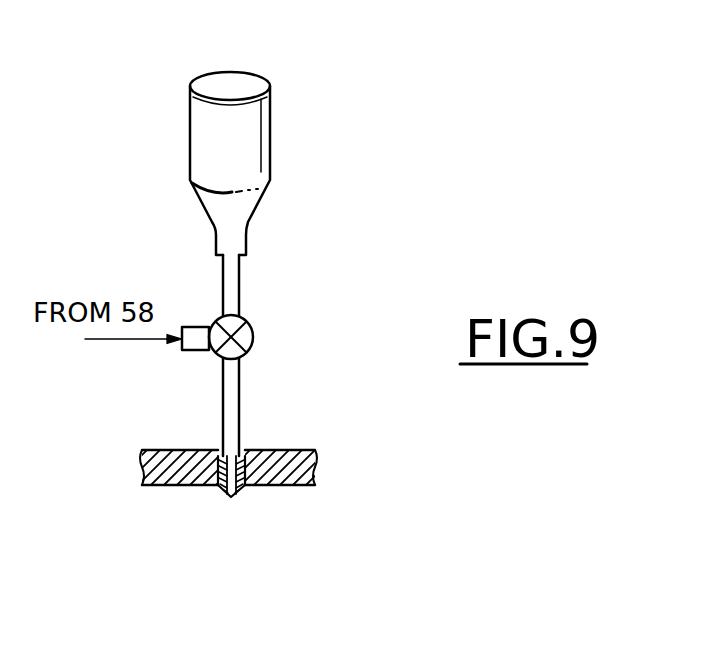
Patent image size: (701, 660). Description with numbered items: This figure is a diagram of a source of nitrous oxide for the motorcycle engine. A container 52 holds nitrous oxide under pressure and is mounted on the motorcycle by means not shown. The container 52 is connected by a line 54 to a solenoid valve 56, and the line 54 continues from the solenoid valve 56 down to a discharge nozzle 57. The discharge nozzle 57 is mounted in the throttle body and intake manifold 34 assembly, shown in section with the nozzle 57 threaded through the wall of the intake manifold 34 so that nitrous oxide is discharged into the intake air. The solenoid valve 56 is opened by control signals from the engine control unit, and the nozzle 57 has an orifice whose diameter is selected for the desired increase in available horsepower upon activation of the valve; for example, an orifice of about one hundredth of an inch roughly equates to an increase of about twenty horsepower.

The container 52 is at (270, 123).
The line 54 is at (241, 277).
The solenoid valve 56 is at (254, 341).
The discharge nozzle 57 is at (266, 450).
The intake manifold 34 is at (288, 486).